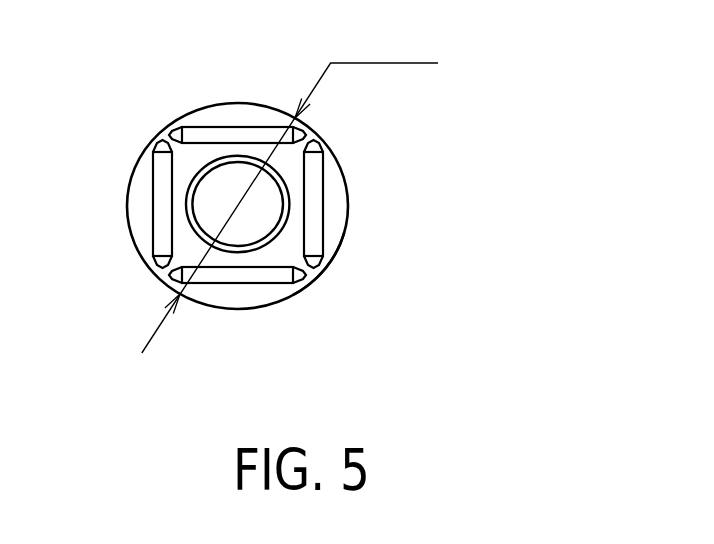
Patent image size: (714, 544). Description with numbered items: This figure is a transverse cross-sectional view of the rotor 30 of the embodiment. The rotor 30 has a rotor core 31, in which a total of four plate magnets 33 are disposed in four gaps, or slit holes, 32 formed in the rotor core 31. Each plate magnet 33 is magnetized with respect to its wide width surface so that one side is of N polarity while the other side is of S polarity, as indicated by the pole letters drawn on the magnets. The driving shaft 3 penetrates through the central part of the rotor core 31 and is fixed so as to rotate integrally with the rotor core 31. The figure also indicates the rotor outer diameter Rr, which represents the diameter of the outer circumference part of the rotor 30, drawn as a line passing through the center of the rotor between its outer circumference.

The driving shaft 3 is at (217, 200).
The rotor 30 is at (304, 210).
The rotor core 31 is at (220, 108).
The gaps (slit holes) 32 is at (330, 265).
The plate magnets 33 is at (315, 172).
The rotor outer diameter Rr is at (290, 186).